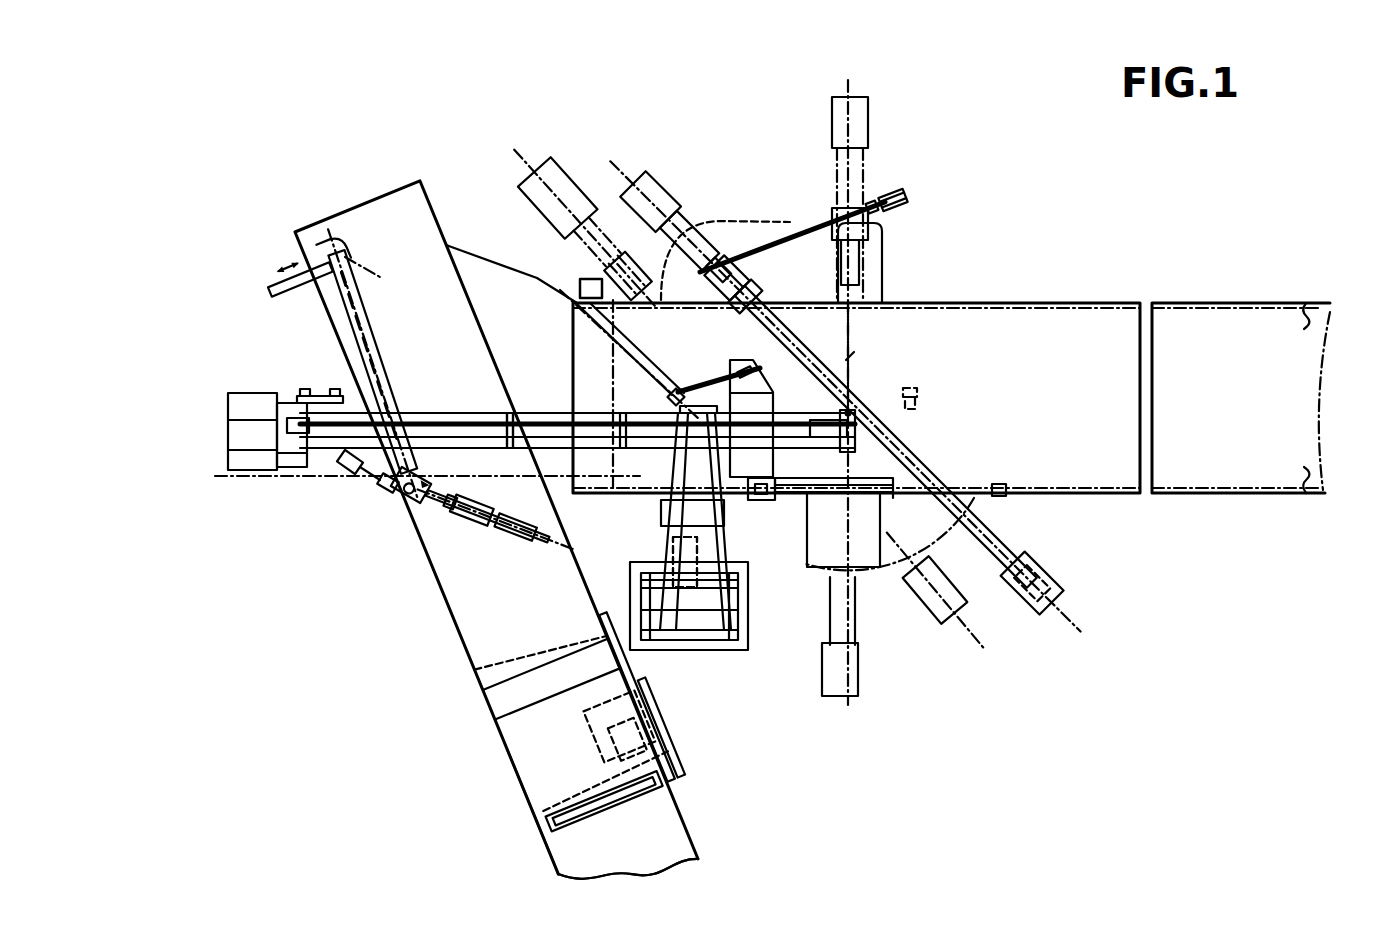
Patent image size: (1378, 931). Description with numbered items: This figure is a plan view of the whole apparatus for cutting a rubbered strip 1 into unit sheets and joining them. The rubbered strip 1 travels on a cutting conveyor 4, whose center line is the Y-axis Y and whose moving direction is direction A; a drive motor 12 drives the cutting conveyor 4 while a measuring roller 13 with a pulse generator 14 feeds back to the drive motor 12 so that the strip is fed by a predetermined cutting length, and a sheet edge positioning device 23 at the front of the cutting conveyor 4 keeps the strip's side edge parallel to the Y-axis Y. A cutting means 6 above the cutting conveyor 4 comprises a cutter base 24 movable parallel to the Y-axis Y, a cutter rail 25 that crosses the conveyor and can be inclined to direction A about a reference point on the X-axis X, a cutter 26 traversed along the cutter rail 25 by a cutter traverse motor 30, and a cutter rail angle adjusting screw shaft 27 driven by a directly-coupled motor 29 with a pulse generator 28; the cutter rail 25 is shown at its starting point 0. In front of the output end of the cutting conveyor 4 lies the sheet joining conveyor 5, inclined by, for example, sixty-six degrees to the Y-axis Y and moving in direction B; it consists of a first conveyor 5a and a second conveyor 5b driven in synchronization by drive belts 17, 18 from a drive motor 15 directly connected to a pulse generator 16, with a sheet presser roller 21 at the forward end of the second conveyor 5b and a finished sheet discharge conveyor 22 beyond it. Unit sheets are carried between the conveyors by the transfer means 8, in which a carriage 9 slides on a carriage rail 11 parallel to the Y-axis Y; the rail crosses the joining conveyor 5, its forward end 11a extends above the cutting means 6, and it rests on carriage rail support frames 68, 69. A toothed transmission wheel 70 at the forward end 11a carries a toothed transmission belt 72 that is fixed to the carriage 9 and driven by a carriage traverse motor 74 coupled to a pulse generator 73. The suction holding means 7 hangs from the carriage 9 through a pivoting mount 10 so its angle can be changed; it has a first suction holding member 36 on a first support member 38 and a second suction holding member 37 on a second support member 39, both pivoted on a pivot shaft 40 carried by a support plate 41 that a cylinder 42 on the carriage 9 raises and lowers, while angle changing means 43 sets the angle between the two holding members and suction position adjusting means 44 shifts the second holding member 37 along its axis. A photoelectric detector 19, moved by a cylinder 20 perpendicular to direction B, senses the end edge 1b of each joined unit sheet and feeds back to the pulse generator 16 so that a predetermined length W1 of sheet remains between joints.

The rubbered strip 1 is at (1153, 310).
The end edge 1b is at (438, 293).
The cutting conveyor 4 is at (1093, 297).
The sheet joining conveyor 5 is at (440, 700).
The first conveyor 5a is at (472, 670).
The second conveyor 5b is at (515, 738).
The cutting means 6 is at (707, 205).
The suction holding means 7 is at (388, 500).
The transfer means 8 is at (321, 390).
The carriage 9 is at (774, 398).
The pivoting mount 10 is at (707, 372).
The carriage rail 11 is at (513, 410).
The forward end of carriage rail 11a is at (858, 400).
The drive motor 12 is at (582, 280).
The measuring roller 13 is at (920, 388).
The pulse generator 14 is at (920, 406).
The drive motor 15 is at (673, 765).
The pulse generator 16 is at (660, 725).
The drive belt 17 is at (634, 680).
The drive belt 18 is at (657, 712).
The photoelectric detector 19 is at (339, 246).
The cylinder 20 is at (280, 272).
The sheet presser roller 21 is at (652, 785).
The finished sheet discharge conveyor 22 is at (690, 845).
The sheet edge positioning device 23 is at (1005, 485).
The cutter base 24 is at (890, 262).
The cutter rail 25 is at (1012, 548).
The cutter 26 is at (727, 262).
The cutter rail angle adjusting screw shaft 27 is at (810, 228).
The pulse generator 28 is at (905, 200).
The directly-coupled motor 29 is at (873, 198).
The cutter traverse motor 30 is at (1063, 584).
The first suction holding member 36 is at (352, 300).
The second suction holding member 37 is at (415, 525).
The first support member 38 is at (665, 398).
The second support member 39 is at (856, 562).
The pivot shaft 40 is at (702, 505).
The support plate 41 is at (753, 305).
The cylinder 42 is at (842, 372).
The angle changing means 43 is at (662, 497).
The suction position adjusting means 44 is at (783, 515).
The carriage rail support frame 68 is at (272, 390).
The carriage rail support frame 69 is at (668, 462).
The toothed transmission wheel 70 is at (303, 456).
The toothed transmission belt 72 is at (530, 412).
The pulse generator 73 is at (262, 395).
The carriage traverse motor 74 is at (288, 470).
The starting point 0 is at (840, 404).
The moving direction of cutting conveyor A is at (1010, 397).
The direction of movement of sheet joining conveyor B is at (492, 552).
The X-axis X is at (852, 620).
The Y-axis Y is at (242, 480).
The predetermined length of sheet between joints W1 is at (384, 358).